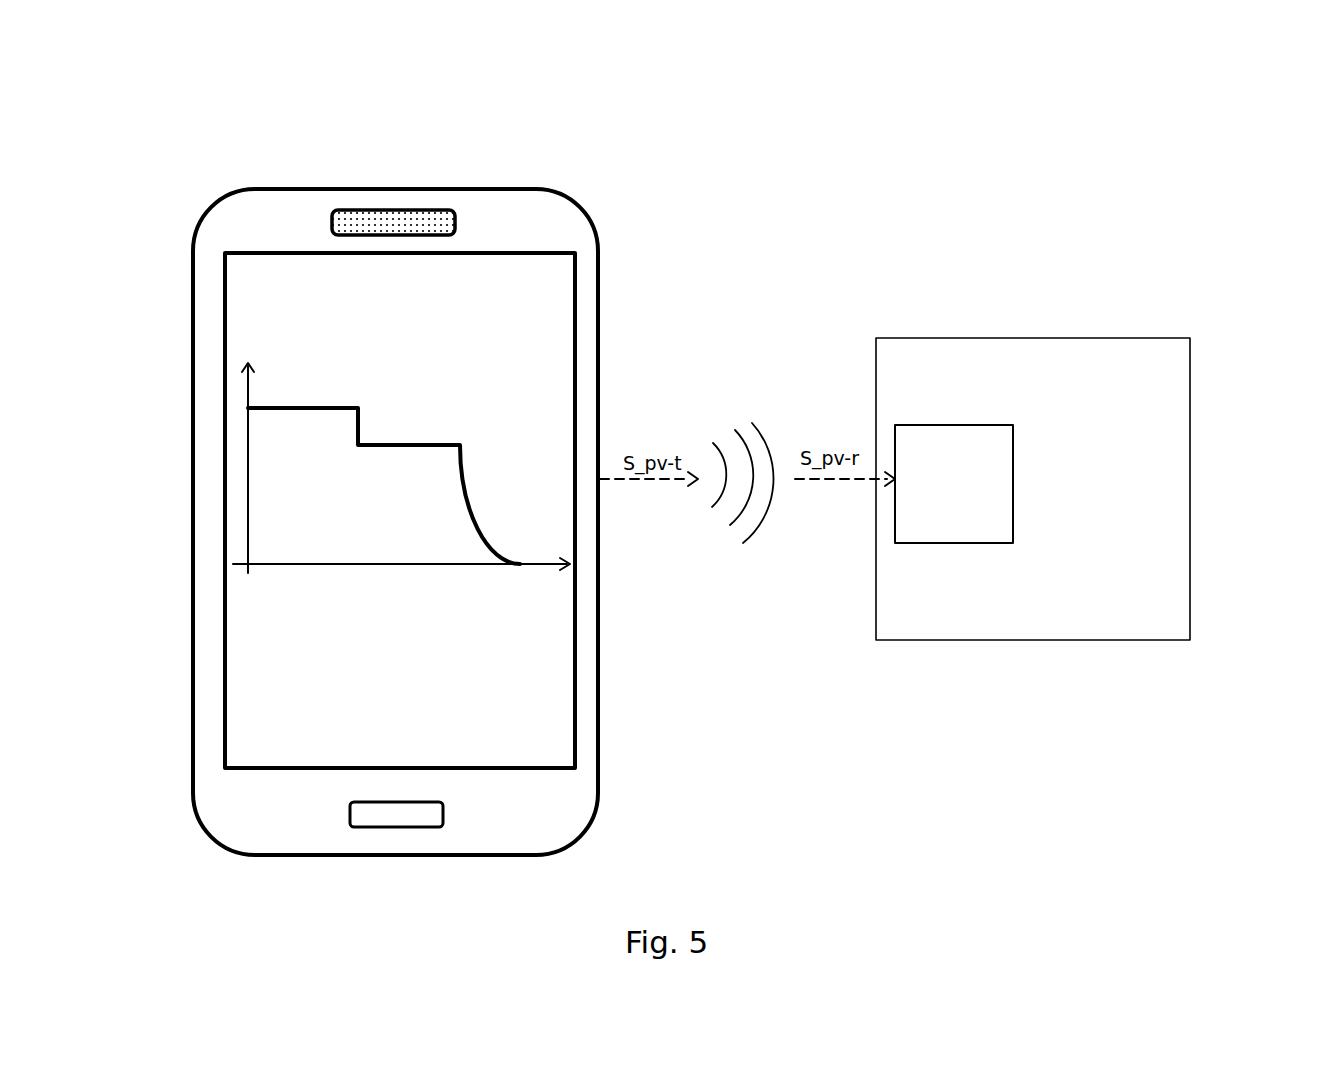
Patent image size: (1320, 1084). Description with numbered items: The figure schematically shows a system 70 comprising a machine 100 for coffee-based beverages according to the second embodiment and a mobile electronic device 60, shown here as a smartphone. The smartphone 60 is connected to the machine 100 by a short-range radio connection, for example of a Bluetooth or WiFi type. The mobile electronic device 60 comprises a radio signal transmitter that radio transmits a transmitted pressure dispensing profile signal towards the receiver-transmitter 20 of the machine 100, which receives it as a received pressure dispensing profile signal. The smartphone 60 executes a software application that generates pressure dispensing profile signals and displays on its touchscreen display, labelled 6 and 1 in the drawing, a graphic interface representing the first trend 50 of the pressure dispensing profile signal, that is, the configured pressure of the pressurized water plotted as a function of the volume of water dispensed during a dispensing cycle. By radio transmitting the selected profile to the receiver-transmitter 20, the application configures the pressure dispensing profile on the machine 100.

The system 70 is at (1221, 146).
The mobile electronic device 60 is at (482, 189).
The display 6 is at (556, 252).
The display screen 1 is at (441, 478).
The pressure dispensing profile signal 50 is at (320, 406).
The machine for coffee-based beverages 100 is at (1190, 437).
The receiver-transmitter 20 is at (959, 425).